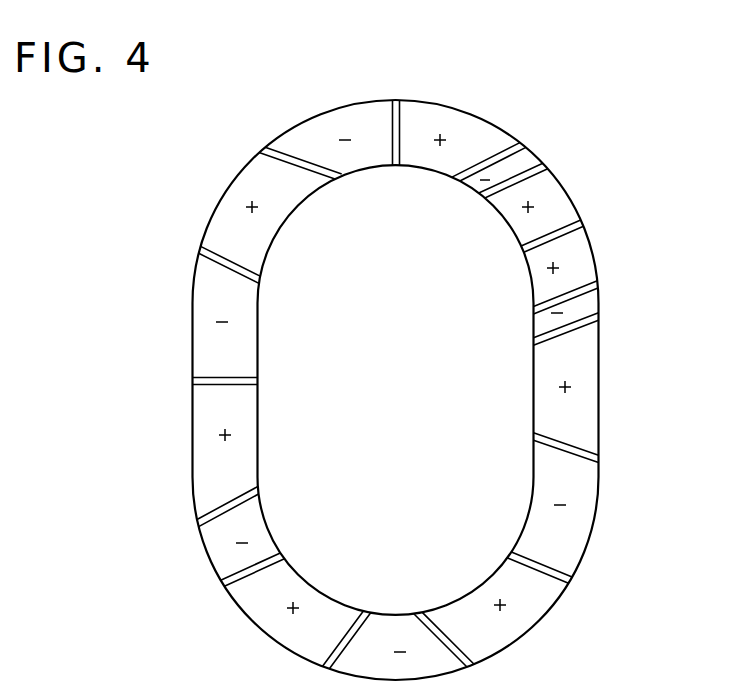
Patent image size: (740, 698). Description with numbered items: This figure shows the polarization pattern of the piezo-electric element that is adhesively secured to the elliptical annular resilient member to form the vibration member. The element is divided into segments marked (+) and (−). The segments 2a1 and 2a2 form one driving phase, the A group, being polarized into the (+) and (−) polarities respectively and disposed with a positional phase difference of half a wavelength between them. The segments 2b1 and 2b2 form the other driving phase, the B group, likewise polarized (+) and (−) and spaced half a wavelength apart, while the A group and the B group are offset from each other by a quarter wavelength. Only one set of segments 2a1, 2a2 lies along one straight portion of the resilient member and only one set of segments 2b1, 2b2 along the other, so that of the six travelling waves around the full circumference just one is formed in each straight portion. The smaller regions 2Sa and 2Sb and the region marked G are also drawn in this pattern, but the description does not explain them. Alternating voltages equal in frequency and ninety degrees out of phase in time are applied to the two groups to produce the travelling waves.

The A-group piezo-electric segment of (+) polarity 2a1 is at (480, 137).
The A-group piezo-electric segment of (−) polarity 2a2 is at (308, 127).
The first sensor magnet segment 2Sa is at (547, 192).
The second sensor magnet segment 2Sb is at (590, 255).
The B-group piezo-electric segment of (+) polarity 2b1 is at (583, 383).
The B-group piezo-electric segment of (−) polarity 2b2 is at (572, 542).
The gap between magnet segments G is at (225, 550).